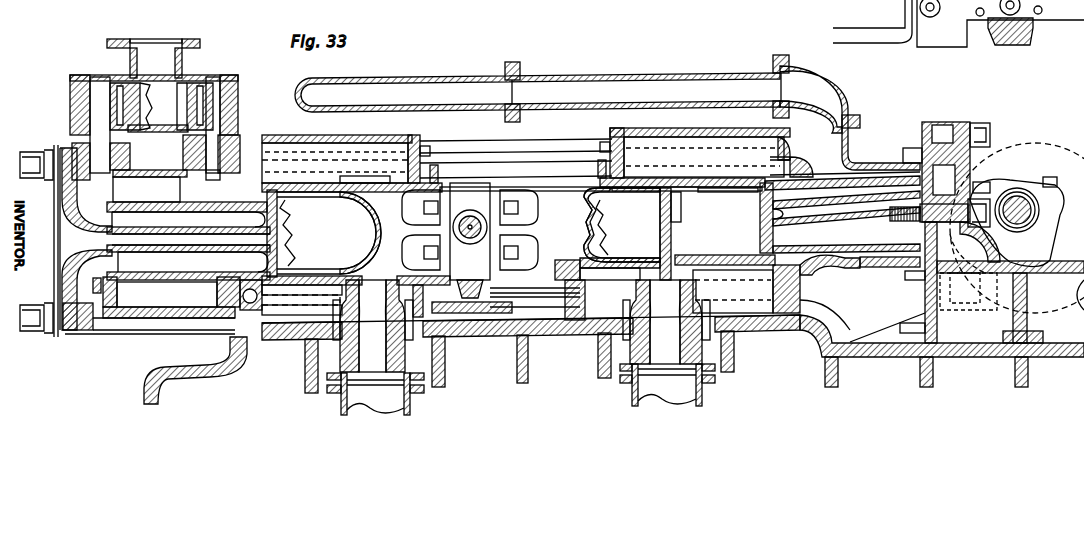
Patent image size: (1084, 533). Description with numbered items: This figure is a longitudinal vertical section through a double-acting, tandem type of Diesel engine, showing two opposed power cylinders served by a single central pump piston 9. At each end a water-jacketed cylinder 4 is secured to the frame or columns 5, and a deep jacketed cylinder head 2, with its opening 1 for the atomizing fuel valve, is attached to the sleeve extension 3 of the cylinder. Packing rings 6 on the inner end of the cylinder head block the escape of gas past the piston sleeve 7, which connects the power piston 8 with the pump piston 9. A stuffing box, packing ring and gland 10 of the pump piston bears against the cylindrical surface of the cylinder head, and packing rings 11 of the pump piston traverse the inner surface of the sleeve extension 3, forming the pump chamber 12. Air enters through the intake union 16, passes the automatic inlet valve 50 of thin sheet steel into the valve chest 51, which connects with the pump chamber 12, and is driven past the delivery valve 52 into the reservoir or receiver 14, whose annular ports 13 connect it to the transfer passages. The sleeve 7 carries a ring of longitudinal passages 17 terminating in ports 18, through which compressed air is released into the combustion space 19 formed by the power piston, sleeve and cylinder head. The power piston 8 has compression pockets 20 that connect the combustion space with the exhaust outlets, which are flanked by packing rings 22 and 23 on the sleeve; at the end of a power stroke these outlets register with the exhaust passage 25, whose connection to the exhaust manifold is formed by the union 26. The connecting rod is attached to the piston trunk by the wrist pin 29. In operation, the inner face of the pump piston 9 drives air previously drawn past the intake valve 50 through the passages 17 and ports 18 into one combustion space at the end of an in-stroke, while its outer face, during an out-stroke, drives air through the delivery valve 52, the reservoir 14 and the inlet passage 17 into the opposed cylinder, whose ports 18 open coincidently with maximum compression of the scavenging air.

The atomizing valve opening 1 is at (102, 240).
The cylinder head 2 is at (66, 200).
The sleeve extension 3 is at (158, 318).
The water-jacketed cylinder 4 is at (416, 142).
The frame or columns 5 is at (230, 345).
The packing rings 6 is at (220, 264).
The piston sleeve 7 is at (190, 318).
The power piston 8 is at (282, 238).
The pump piston 9 is at (118, 295).
The stuffing box, packing ring and gland 10 is at (95, 285).
The packing rings 11 is at (110, 318).
The pump chamber 12 is at (146, 188).
The ports 13 is at (214, 150).
The air passage (reservoir or receiver) 14 is at (607, 112).
The intake union 16 is at (182, 38).
The passages 17 is at (814, 178).
The ports 18 is at (170, 280).
The combustion space 19 is at (728, 209).
The compression pockets 20 is at (676, 232).
The packing rings 22 is at (188, 312).
The packing rings 23 is at (298, 270).
The exhaust passage 25 is at (373, 326).
The union 26 is at (428, 390).
The wrist pin 29 is at (470, 218).
The automatic inlet valve 50 is at (191, 106).
The valve chest 51 is at (85, 106).
The delivery valve 52 is at (131, 106).